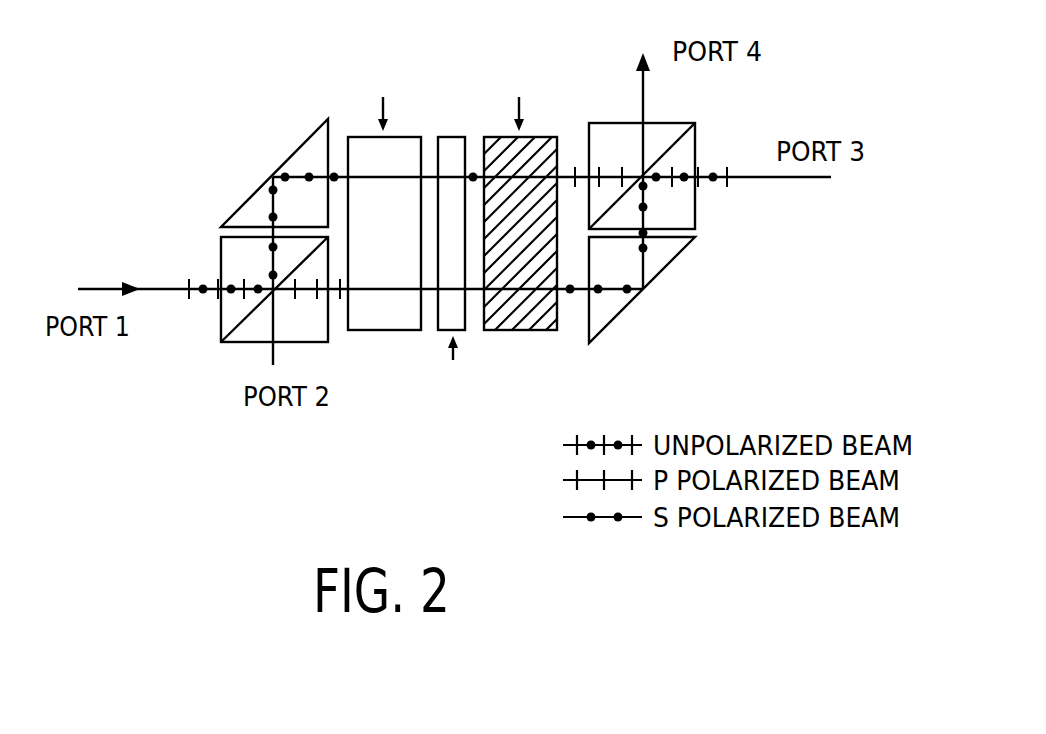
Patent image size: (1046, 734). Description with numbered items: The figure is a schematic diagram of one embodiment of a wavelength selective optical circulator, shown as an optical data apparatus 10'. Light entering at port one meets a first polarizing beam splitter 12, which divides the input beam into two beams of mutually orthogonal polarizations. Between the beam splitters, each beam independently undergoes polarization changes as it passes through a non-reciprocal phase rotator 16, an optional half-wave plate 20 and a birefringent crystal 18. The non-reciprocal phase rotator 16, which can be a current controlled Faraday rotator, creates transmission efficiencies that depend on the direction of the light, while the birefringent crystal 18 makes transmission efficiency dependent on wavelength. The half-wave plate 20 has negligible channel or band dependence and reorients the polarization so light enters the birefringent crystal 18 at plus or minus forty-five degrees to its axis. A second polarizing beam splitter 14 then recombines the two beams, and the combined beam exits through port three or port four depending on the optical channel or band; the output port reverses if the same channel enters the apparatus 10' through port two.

The optical data apparatus 10' is at (459, 228).
The first polarizing beam splitter 12 is at (232, 252).
The second polarizing beam splitter 14 is at (695, 140).
The non-reciprocal phase rotator 16 is at (393, 143).
The birefringent crystal 18 is at (537, 143).
The half-wave plate 20 is at (443, 320).